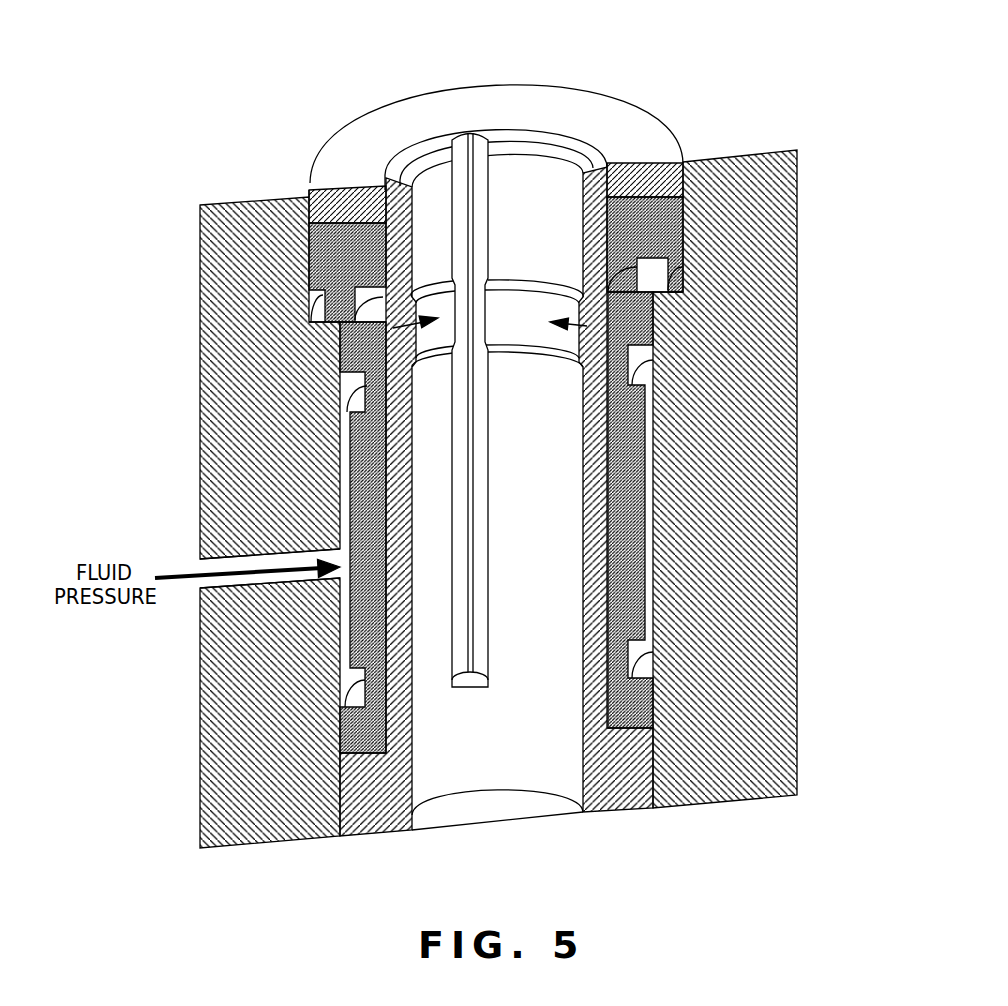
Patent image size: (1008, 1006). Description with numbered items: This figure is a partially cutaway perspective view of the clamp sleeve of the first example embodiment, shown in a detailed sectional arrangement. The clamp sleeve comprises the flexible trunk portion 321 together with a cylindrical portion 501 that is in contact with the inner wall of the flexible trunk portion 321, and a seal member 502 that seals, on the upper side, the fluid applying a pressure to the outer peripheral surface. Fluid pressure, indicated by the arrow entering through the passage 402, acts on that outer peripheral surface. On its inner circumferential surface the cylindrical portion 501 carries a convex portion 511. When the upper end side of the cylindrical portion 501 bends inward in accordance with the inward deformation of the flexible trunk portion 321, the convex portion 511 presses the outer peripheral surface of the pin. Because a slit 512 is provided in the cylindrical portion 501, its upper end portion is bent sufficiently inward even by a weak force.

The flexible trunk portion 321 is at (632, 507).
The fluid pressure channel 402 is at (210, 562).
The cylindrical portion 501 is at (596, 228).
The seal member 502 is at (653, 227).
The convex portion 511 is at (532, 314).
The slit 512 is at (460, 135).